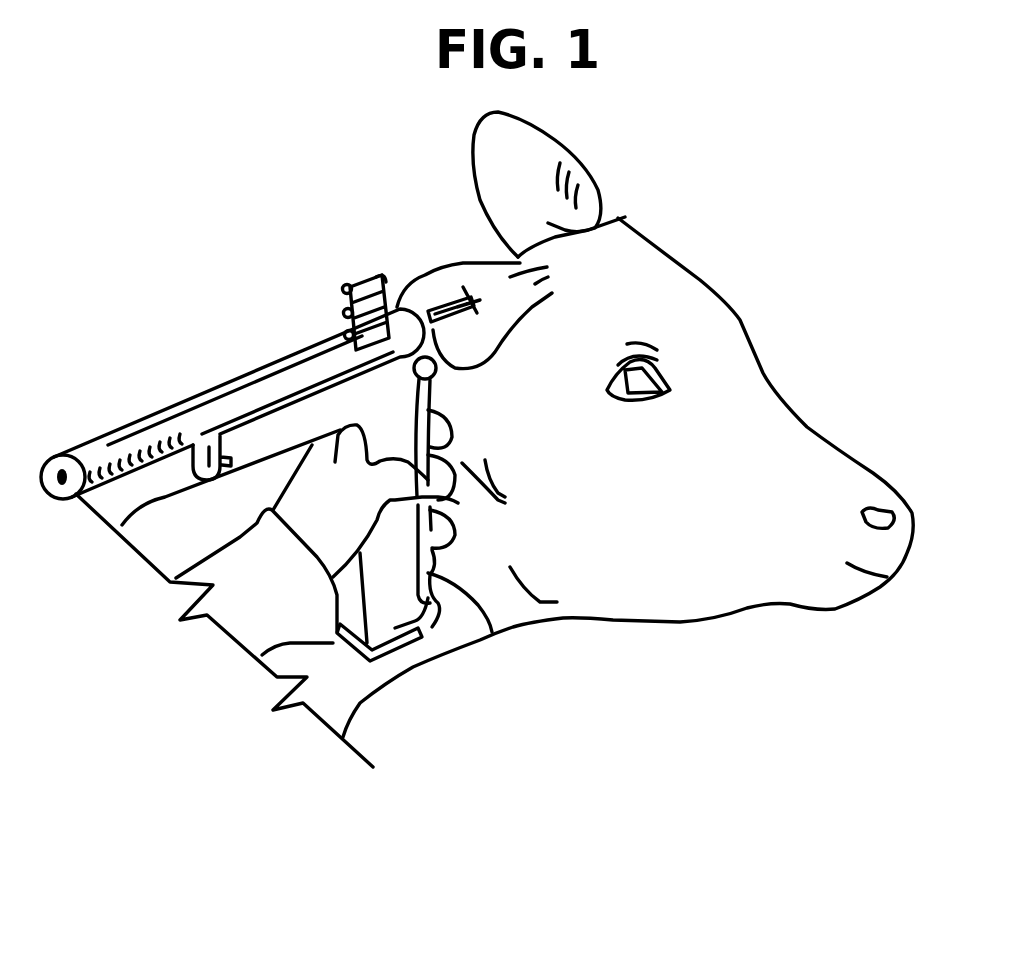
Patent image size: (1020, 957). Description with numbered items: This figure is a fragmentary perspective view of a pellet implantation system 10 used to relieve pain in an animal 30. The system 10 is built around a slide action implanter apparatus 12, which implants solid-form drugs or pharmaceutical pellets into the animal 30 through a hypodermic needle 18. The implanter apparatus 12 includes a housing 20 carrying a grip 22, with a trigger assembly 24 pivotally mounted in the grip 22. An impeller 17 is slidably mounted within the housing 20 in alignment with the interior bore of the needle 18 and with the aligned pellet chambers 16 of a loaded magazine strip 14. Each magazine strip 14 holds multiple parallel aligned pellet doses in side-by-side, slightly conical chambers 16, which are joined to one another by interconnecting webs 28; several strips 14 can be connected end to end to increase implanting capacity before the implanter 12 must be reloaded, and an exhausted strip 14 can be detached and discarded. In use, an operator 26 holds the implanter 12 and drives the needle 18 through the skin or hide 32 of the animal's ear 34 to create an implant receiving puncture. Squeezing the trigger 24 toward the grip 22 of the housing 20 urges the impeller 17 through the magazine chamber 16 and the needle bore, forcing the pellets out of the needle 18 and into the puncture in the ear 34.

The pellet implantation system 10 is at (460, 722).
The slide action implanter apparatus 12 is at (143, 417).
The magazine strip 14 is at (372, 273).
The pellet chambers 16 is at (345, 290).
The impeller 17 is at (63, 455).
The hypodermic needle 18 is at (463, 290).
The housing 20 is at (122, 525).
The grip 22 is at (384, 622).
The trigger assembly 24 is at (478, 607).
The operator 26 is at (233, 618).
The interconnecting webs 28 is at (384, 284).
The animal 30 is at (745, 325).
The skin or hide 32 is at (620, 220).
The animal's ear 34 is at (497, 360).